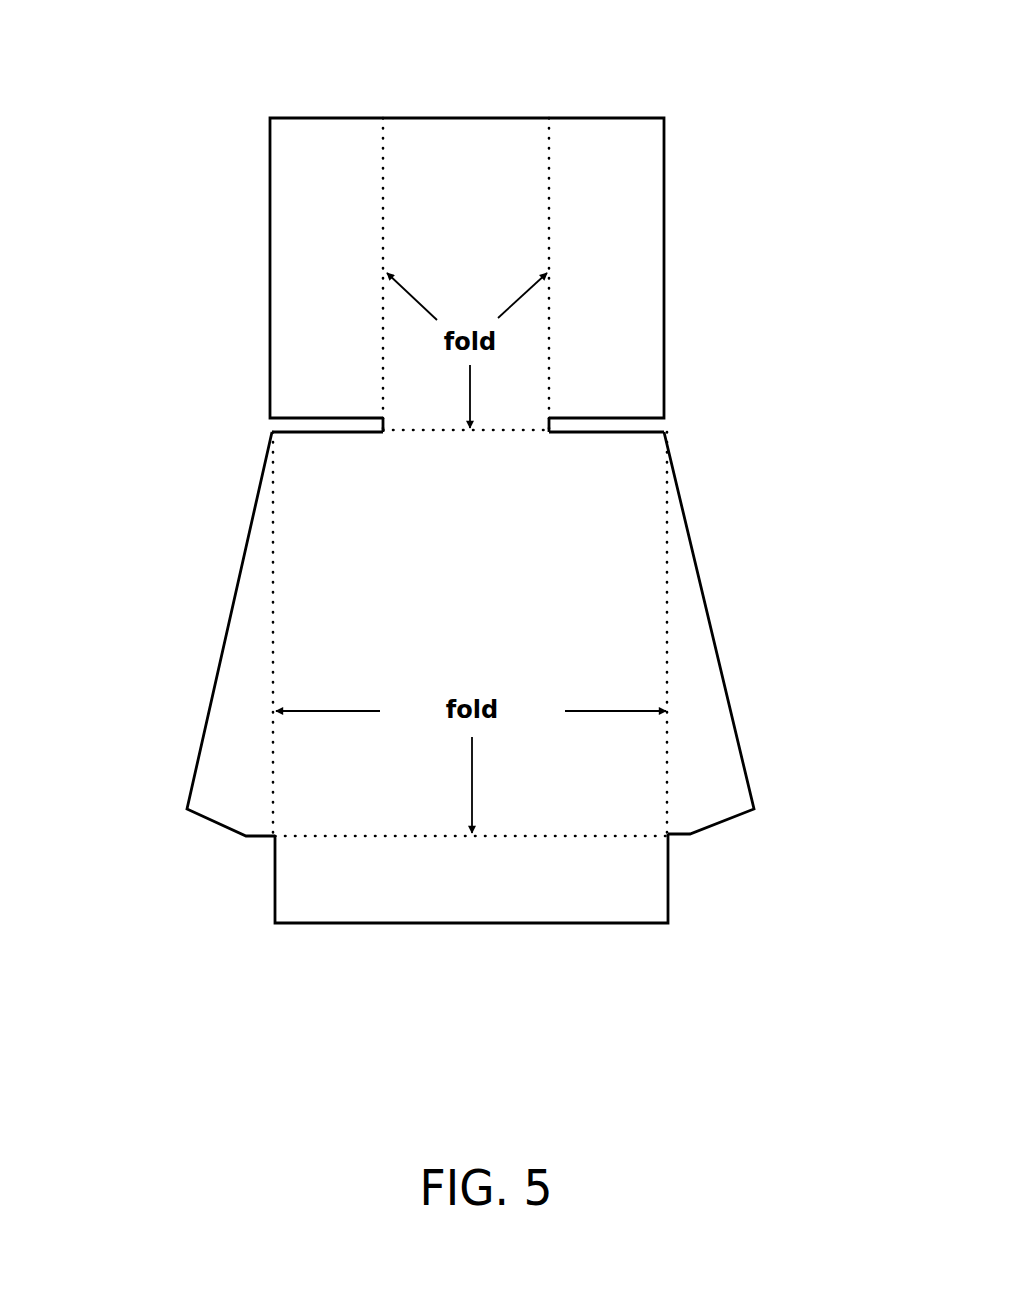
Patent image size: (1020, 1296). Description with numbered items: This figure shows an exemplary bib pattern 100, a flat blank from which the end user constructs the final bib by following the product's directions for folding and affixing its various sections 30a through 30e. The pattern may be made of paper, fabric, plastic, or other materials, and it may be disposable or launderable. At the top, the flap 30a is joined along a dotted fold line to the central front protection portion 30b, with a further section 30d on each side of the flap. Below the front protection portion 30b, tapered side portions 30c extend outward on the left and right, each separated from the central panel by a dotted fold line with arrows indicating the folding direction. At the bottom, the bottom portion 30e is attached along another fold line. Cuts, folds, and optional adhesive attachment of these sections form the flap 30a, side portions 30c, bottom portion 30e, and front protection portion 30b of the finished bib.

The flap 30a is at (465, 147).
The front protection portion 30b is at (297, 527).
The side portions 30c is at (245, 635).
The section of the bib pattern 30d is at (280, 237).
The bottom portion 30e is at (387, 908).
The bib pattern 100 is at (698, 332).